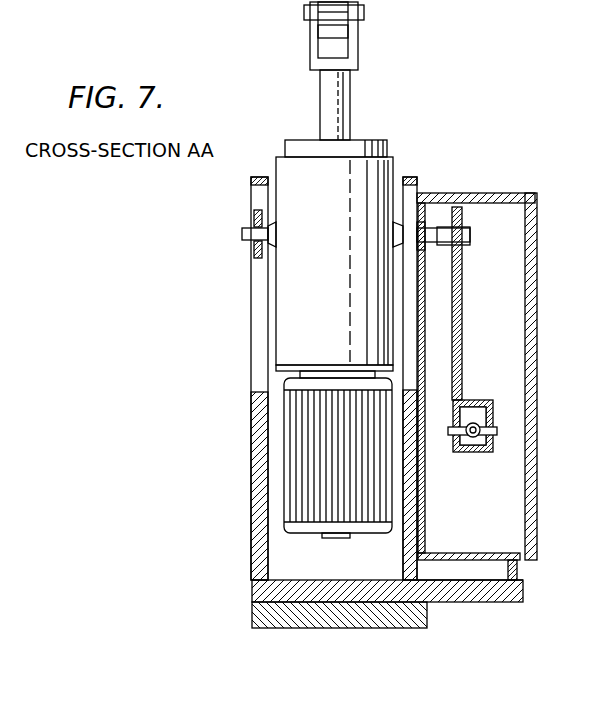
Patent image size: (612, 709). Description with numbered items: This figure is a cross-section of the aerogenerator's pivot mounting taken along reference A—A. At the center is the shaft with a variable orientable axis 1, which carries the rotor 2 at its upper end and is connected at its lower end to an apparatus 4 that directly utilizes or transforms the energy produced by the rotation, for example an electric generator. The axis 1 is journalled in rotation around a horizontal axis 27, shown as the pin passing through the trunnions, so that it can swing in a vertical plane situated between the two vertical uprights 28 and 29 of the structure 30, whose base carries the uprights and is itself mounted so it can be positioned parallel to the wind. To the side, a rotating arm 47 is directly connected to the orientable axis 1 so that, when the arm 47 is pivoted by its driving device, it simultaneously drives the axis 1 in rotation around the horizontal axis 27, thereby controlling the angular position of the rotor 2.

The variable orientation axis 1 is at (340, 104).
The rotor 2 is at (330, 17).
The apparatus 4 is at (290, 494).
The horizontal axis 27 is at (246, 228).
The vertical upright 28 is at (255, 380).
The vertical upright 29 is at (410, 503).
The structure 30 is at (455, 607).
The rotating arm 47 is at (462, 360).